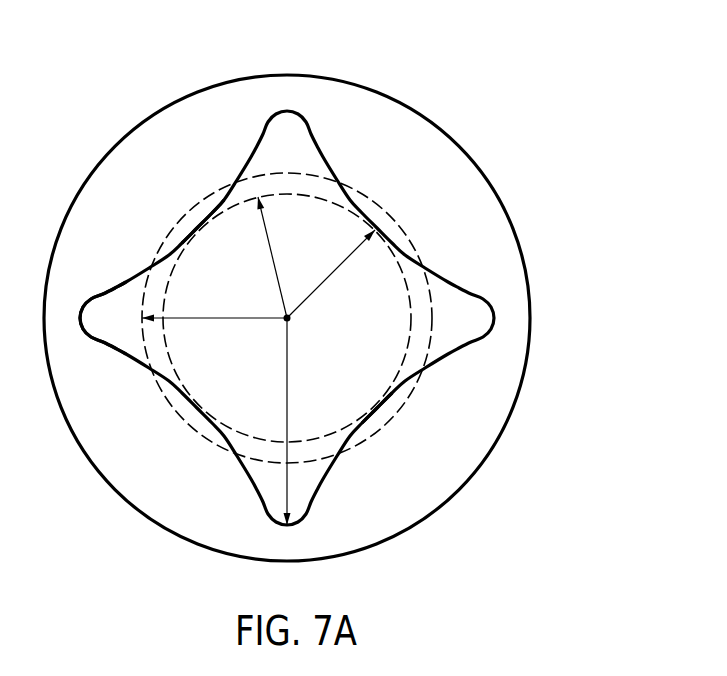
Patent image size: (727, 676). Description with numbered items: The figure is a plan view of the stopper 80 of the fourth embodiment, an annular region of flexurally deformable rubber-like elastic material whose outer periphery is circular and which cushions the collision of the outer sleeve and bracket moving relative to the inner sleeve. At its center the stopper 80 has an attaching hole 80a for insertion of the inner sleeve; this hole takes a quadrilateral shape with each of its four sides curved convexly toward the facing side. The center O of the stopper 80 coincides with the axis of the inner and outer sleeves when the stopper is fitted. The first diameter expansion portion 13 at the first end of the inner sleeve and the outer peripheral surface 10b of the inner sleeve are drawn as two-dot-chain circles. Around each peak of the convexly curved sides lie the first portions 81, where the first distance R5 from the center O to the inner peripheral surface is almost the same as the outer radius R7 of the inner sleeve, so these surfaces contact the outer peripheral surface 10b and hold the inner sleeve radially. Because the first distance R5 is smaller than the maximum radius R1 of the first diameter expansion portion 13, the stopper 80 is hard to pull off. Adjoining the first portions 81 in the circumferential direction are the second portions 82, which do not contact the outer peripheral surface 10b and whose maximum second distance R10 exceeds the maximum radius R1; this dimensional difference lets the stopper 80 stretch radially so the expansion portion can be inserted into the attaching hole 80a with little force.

The stopper 80 is at (513, 148).
The second portions 82 is at (287, 95).
The attaching hole 80a is at (133, 342).
The first portions 81 is at (193, 218).
The first diameter expansion portion 13 is at (378, 207).
The outer peripheral surface 10b is at (411, 303).
The center O is at (290, 323).
The maximum radius of the first diameter expansion portion R1 is at (210, 312).
The first distance R5 is at (326, 284).
The outer radius of the inner sleeve R7 is at (276, 268).
The maximum value of the second distance R10 is at (287, 376).